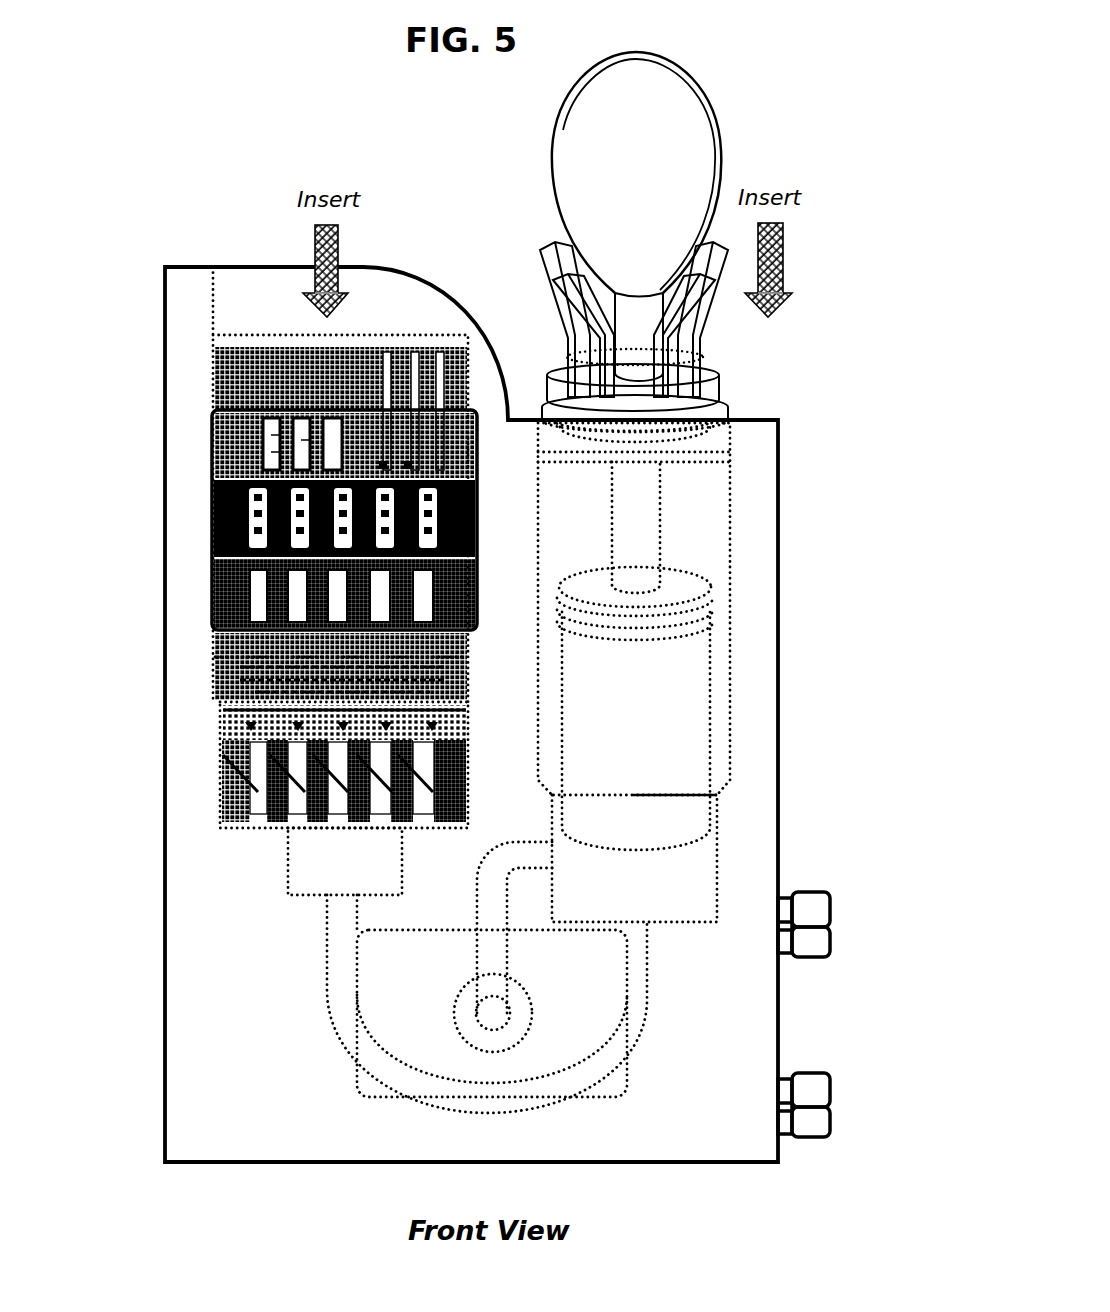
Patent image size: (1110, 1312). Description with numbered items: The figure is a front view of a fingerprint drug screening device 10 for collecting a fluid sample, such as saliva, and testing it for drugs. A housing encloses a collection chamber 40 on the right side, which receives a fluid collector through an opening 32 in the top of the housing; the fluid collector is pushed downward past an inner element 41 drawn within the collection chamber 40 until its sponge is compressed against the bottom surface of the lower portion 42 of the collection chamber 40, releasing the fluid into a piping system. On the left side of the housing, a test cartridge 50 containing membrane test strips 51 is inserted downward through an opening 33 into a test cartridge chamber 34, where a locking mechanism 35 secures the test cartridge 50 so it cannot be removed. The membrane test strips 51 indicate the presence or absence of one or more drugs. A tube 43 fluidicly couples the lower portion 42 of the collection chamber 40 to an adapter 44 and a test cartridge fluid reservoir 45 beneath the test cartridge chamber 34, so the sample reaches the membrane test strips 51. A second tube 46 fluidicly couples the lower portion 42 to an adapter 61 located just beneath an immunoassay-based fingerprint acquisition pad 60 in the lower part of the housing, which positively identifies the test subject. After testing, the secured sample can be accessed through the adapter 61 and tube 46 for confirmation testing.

The fingerprint drug screening device 10 is at (334, 144).
The opening 32 is at (740, 407).
The opening 33 is at (356, 255).
The test cartridge chamber 34 is at (213, 325).
The locking mechanism 35 is at (223, 363).
The collection chamber 40 is at (730, 563).
The jar 41 is at (733, 777).
The lower portion 42 is at (720, 873).
The tube 43 is at (647, 987).
The adapter 44 is at (312, 897).
The test cartridge fluid reservoir 45 is at (218, 832).
The tube 46 is at (523, 870).
The test cartridge 50 is at (228, 453).
The membrane test strips 51 is at (400, 755).
The immunoassay-based fingerprint acquisition pad 60 is at (627, 1093).
The adapter 61 is at (465, 987).